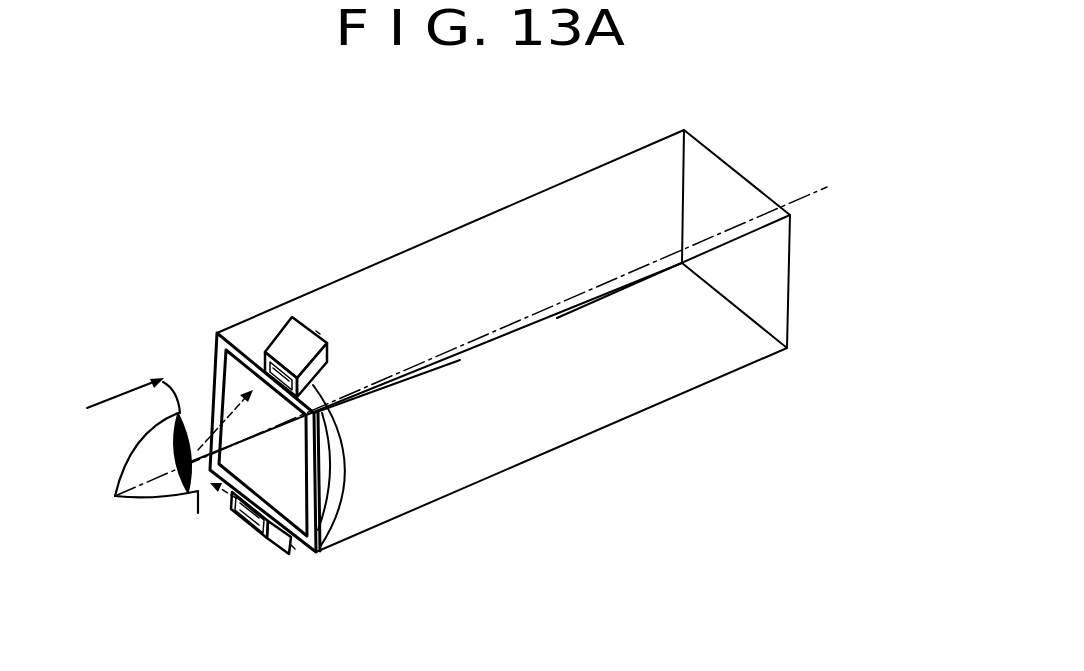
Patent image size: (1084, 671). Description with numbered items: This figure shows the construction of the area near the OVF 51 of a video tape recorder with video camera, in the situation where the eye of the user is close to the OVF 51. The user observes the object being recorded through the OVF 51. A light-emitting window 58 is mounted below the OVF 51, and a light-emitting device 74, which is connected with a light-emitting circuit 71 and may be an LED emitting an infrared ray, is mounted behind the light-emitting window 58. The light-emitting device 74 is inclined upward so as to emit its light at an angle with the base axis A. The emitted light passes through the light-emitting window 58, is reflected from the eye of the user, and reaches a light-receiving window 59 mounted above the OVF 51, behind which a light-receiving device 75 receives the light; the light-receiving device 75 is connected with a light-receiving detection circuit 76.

The OVF 51 is at (215, 347).
The light-receiving window 59 is at (252, 348).
The light-receiving device 75 is at (279, 330).
The light-emitting device 74 is at (278, 548).
The light-emitting window 58 is at (237, 520).
The light-emitting circuit 71 is at (293, 547).
The light-receiving detection circuit 76 is at (318, 332).
The base axis A is at (793, 202).